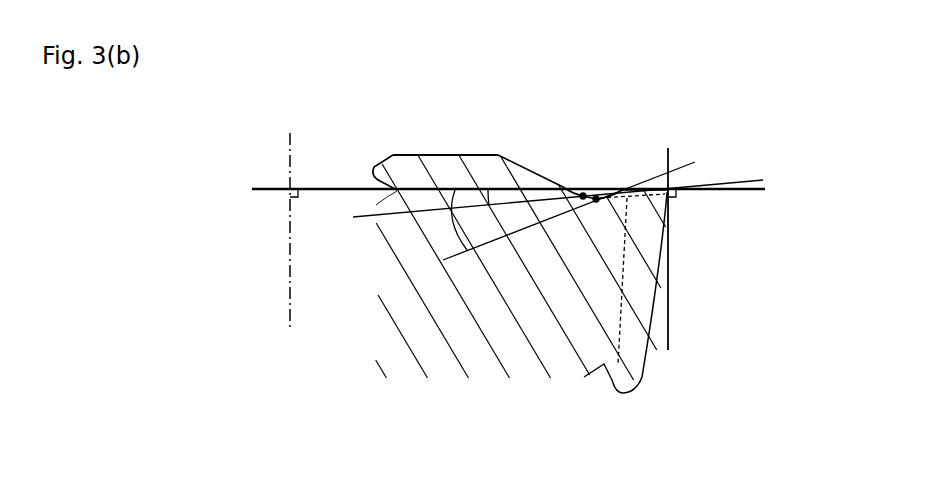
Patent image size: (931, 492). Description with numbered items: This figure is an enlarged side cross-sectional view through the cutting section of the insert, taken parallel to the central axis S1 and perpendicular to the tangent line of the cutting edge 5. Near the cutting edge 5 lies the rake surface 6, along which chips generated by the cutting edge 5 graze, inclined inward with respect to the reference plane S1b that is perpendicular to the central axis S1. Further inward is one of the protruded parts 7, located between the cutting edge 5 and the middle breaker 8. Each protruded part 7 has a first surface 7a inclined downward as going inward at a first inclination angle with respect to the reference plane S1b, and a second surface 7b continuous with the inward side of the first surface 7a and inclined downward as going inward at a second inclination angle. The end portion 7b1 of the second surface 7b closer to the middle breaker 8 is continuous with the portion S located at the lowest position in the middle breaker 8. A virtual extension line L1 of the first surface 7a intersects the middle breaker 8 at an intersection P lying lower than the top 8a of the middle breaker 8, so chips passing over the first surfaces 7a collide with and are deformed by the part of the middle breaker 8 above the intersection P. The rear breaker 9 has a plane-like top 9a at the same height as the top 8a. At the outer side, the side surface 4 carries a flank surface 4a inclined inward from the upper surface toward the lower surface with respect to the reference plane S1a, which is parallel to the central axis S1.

The side surface 4 is at (511, 247).
The flank surface 4a is at (648, 350).
The cutting edge 5 is at (667, 189).
The rake surface 6 is at (612, 396).
The protruded part 7 is at (688, 58).
The first surface 7a is at (633, 190).
The second surface 7b is at (603, 190).
The end portion of the second surface 7b1 is at (581, 200).
The portion located at the lowest position in the middle breaker S is at (571, 325).
The middle breaker 8 is at (593, 110).
The top of the middle breaker 8a is at (468, 156).
The rear breaker 9 is at (432, 110).
The top of the rear breaker 9a is at (410, 156).
The intersection P is at (583, 194).
The virtual extension line L1 is at (383, 217).
The central axis S1 is at (288, 146).
The reference plane S1a is at (669, 313).
The reference plane S1b is at (330, 191).